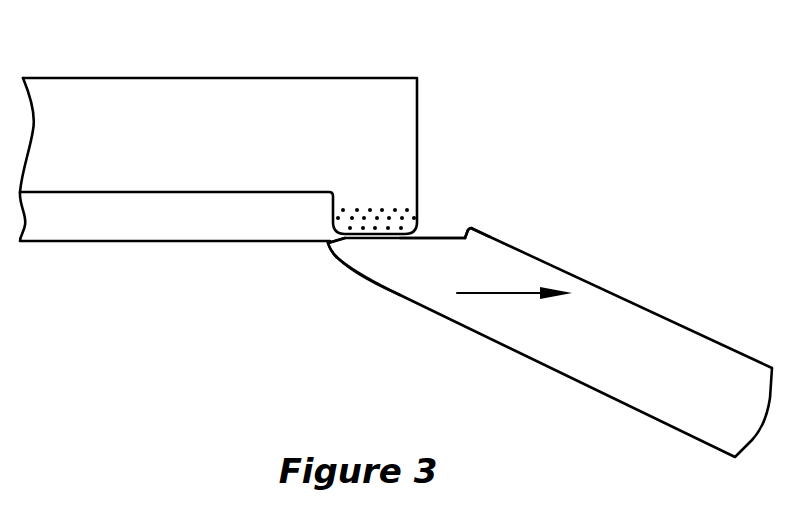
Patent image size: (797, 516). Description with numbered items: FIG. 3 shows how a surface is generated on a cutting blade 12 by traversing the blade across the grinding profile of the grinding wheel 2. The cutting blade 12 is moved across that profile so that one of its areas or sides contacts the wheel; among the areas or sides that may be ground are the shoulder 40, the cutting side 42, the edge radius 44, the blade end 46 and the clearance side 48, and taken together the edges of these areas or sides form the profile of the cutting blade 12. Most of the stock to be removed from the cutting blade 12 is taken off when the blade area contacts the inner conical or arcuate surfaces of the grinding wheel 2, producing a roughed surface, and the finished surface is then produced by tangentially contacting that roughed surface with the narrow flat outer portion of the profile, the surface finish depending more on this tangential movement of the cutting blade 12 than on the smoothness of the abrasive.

The grinding wheel 2 is at (318, 68).
The cutting blade 12 is at (657, 295).
The shoulder 40 is at (465, 230).
The cutting side 42 is at (437, 236).
The edge radius 44 is at (335, 242).
The blade end 46 is at (323, 248).
The clearance side 48 is at (343, 267).